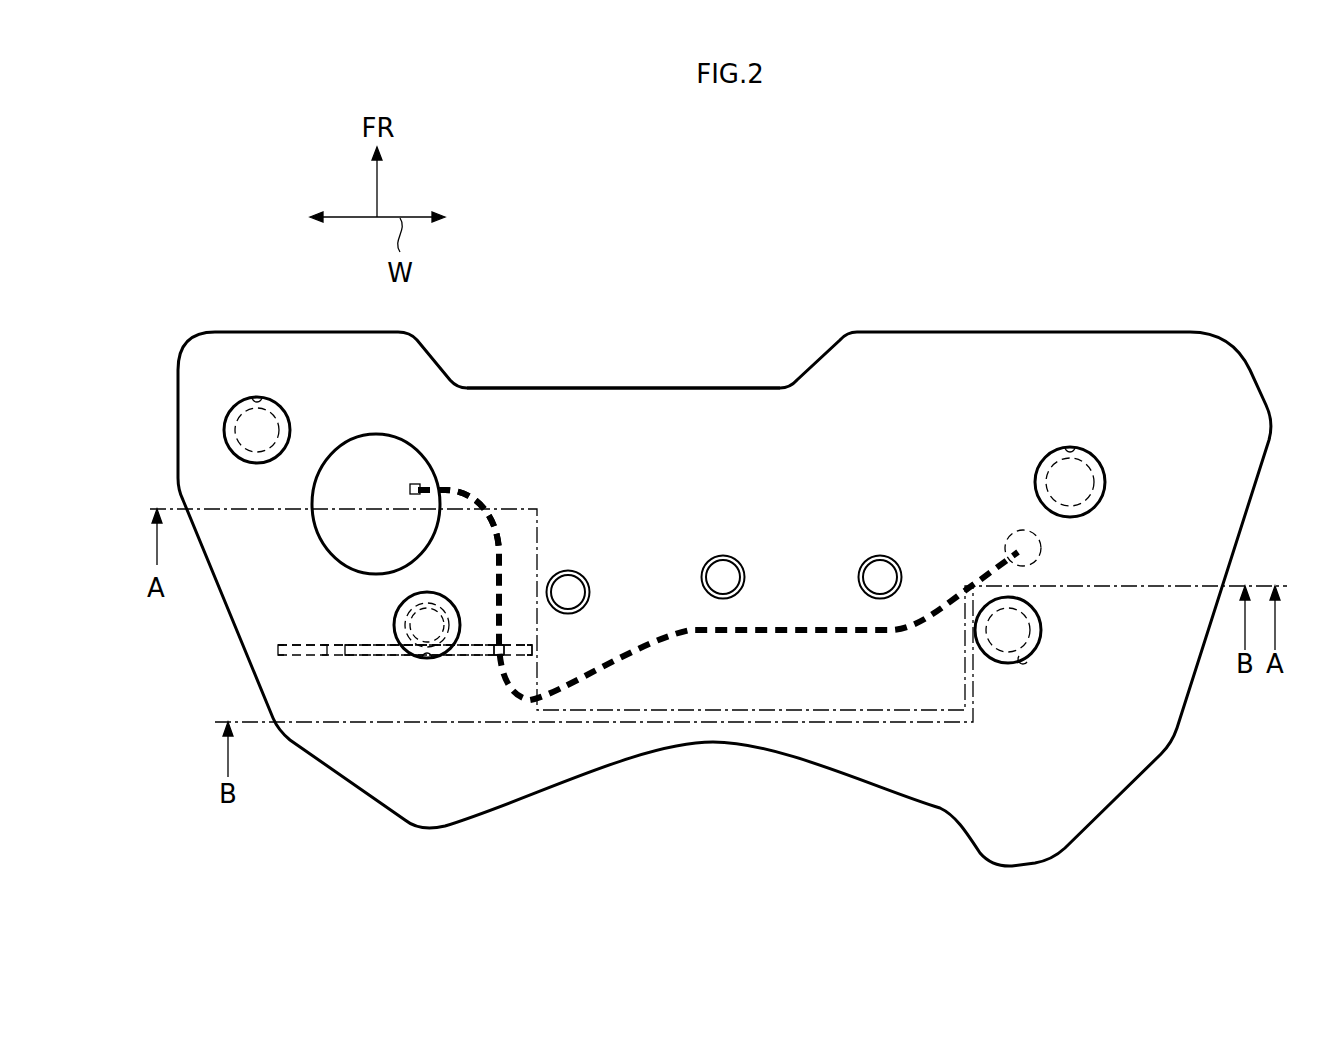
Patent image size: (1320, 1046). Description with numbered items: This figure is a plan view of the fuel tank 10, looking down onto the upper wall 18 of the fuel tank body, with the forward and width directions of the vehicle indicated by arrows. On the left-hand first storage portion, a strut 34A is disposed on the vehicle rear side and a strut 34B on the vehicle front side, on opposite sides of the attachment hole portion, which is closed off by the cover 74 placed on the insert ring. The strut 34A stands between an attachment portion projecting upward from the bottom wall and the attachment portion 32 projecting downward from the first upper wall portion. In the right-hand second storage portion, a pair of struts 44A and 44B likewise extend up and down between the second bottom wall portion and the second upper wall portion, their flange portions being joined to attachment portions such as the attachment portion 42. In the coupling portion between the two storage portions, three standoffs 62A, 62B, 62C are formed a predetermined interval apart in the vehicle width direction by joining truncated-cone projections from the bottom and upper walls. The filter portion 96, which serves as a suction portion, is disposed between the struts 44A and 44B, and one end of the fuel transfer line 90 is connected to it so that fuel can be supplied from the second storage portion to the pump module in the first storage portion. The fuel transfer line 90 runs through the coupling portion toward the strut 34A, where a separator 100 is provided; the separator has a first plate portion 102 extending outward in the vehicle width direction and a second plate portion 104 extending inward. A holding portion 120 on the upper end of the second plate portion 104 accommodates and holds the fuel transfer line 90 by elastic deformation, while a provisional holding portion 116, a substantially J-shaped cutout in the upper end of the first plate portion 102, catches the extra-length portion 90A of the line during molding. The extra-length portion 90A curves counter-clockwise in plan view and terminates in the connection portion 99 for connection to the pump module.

The fuel tank 10 is at (945, 328).
The upper wall 18 is at (662, 407).
The attachment portion 32 is at (257, 397).
The strut 34A is at (395, 605).
The strut 34B is at (225, 430).
The attachment portion 42 is at (1070, 447).
The strut 44A is at (1033, 630).
The strut 44B is at (1095, 470).
The standoff 62A is at (572, 567).
The standoff 62B is at (723, 550).
The standoff 62C is at (880, 550).
The cover 74 is at (390, 433).
The fuel transfer line 90 is at (770, 633).
The extra-length portion 90A is at (482, 497).
The filter portion 96 is at (1040, 558).
The connection portion 99 is at (415, 480).
The separator 100 is at (355, 665).
The first plate portion 102 is at (278, 650).
The second plate portion 104 is at (535, 650).
The provisional holding portion 116 is at (337, 660).
The holding portion 120 is at (495, 660).